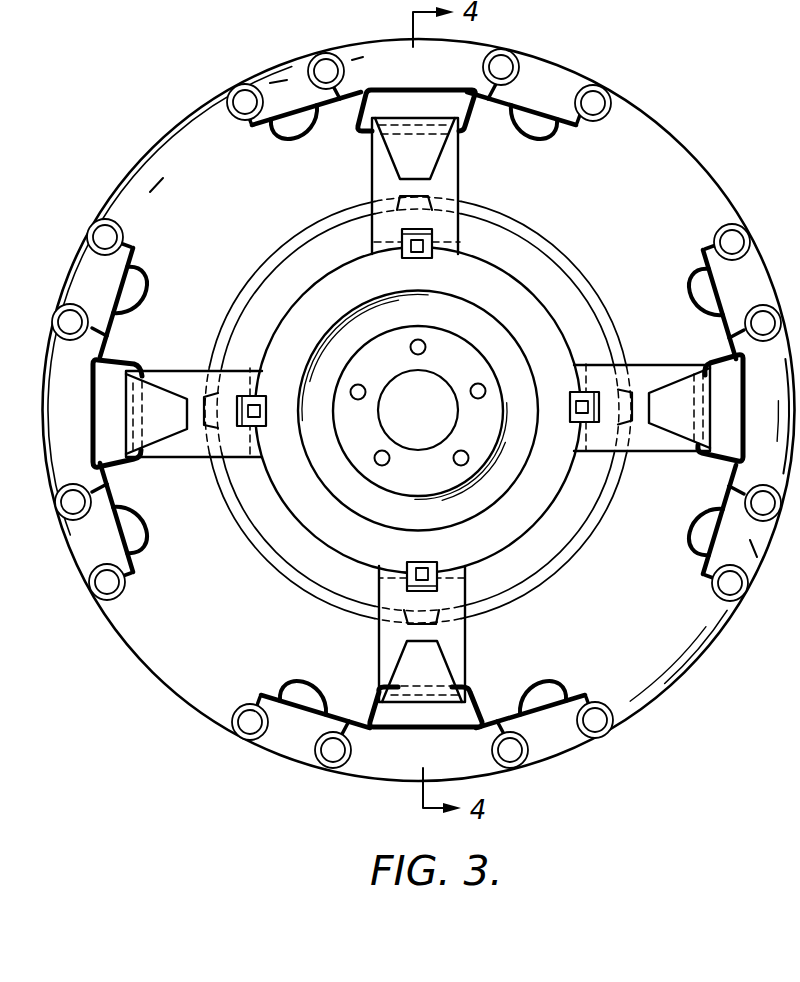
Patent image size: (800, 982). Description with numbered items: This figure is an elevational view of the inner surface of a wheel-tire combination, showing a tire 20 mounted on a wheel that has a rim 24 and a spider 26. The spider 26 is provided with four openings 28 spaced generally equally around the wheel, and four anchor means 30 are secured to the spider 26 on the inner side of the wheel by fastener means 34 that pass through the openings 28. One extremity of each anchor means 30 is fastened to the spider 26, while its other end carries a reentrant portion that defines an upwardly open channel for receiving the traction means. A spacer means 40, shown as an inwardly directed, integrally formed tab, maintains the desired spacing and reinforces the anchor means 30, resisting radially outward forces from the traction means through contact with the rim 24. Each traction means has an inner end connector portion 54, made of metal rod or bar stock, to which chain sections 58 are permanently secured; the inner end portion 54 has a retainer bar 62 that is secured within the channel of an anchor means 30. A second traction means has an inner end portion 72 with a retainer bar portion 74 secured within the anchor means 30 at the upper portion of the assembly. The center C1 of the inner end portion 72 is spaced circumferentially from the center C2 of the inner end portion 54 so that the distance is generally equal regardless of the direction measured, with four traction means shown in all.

The tire 20 is at (704, 658).
The rim 24 is at (548, 275).
The spider 26 is at (507, 340).
The openings 28 is at (490, 257).
The anchor means 30 is at (448, 165).
The fastener means 34 is at (418, 258).
The spacer means 40 is at (437, 202).
The inner end connector portion 54 is at (251, 681).
The chain sections 58 is at (308, 765).
The retainer bar 62 is at (423, 680).
The inner end portion 72 is at (236, 134).
The retainer bar portion 74 is at (410, 142).
The center of inner end portion 72 C1 is at (430, 88).
The center of inner end portion 54 C2 is at (422, 733).